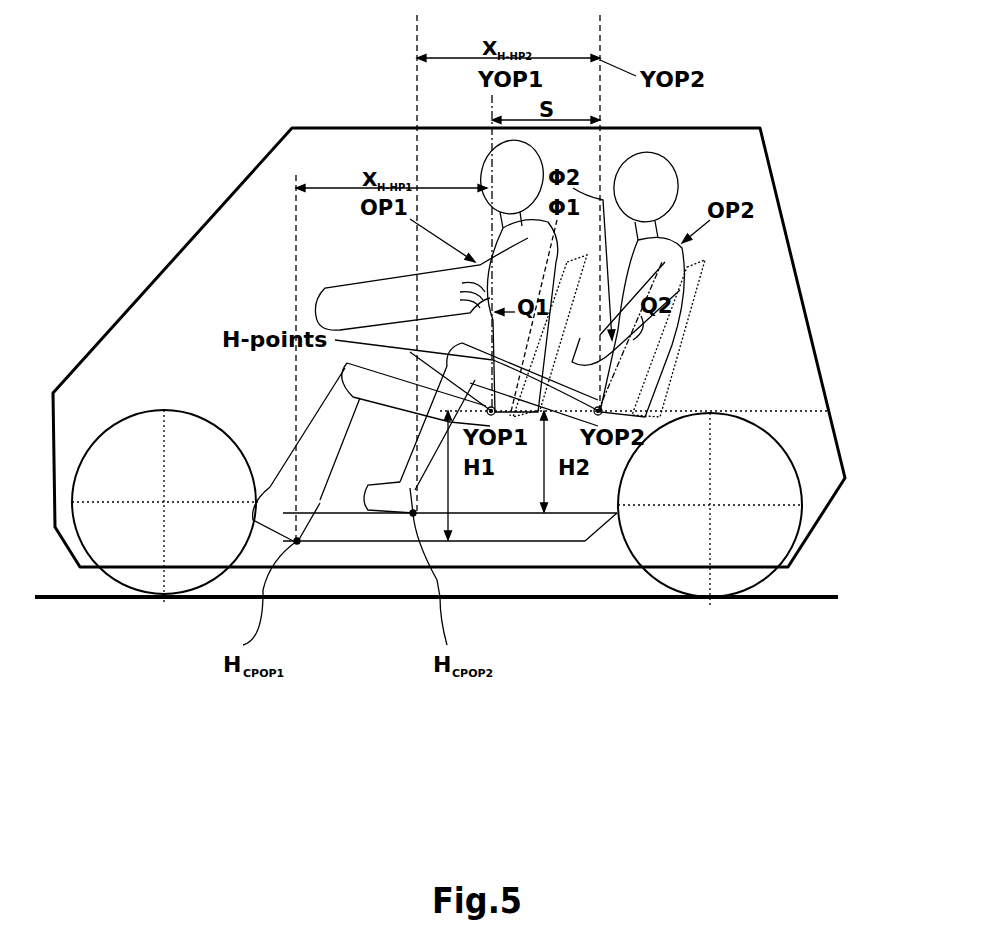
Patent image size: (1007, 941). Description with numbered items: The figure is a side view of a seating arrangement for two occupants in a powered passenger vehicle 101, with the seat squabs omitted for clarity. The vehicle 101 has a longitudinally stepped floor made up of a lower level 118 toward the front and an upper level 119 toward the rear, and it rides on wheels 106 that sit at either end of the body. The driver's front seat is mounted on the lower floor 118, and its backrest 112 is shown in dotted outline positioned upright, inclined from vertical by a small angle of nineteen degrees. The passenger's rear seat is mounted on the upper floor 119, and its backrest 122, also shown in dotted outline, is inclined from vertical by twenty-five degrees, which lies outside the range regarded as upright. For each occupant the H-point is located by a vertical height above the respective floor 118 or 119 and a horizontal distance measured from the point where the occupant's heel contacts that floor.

The powered passenger vehicle 101 is at (322, 122).
The wheels 106 is at (130, 592).
The backrest 112 is at (585, 250).
The lower level floor 118 is at (378, 541).
The upper level floor 119 is at (558, 513).
The backrest 122 is at (702, 264).